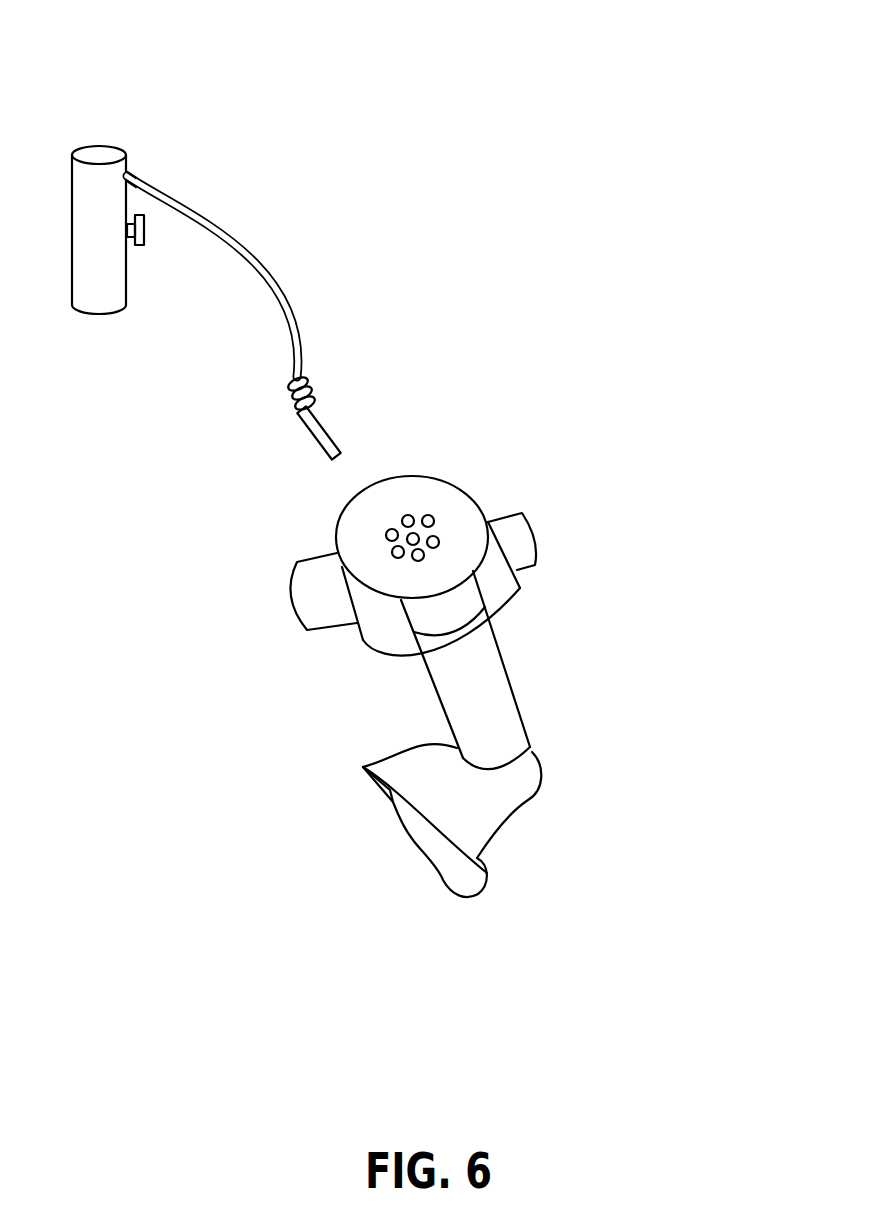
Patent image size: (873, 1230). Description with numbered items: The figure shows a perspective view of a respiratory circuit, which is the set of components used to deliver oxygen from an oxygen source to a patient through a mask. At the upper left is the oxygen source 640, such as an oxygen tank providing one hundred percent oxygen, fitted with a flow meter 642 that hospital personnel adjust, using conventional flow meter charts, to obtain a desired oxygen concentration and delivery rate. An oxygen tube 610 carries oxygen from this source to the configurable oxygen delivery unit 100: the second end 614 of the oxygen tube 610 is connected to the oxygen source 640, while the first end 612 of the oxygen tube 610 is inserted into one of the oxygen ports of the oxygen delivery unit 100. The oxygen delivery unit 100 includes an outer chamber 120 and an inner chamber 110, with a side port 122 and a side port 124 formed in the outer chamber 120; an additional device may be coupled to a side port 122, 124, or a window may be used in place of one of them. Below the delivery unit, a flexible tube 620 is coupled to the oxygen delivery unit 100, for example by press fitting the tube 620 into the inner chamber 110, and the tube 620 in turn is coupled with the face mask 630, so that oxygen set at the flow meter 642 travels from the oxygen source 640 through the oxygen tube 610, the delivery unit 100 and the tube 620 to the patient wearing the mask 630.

The oxygen source 640 is at (87, 138).
The flow meter 642 is at (145, 245).
The oxygen tube 610 is at (262, 257).
The second end 614 is at (130, 173).
The first end 612 is at (333, 425).
The configurable oxygen delivery unit 100 is at (480, 497).
The outer chamber 120 is at (366, 642).
The side port 122 is at (310, 555).
The side port 124 is at (532, 532).
The inner chamber 110 is at (492, 582).
The tube 620 is at (513, 690).
The mask 630 is at (527, 808).